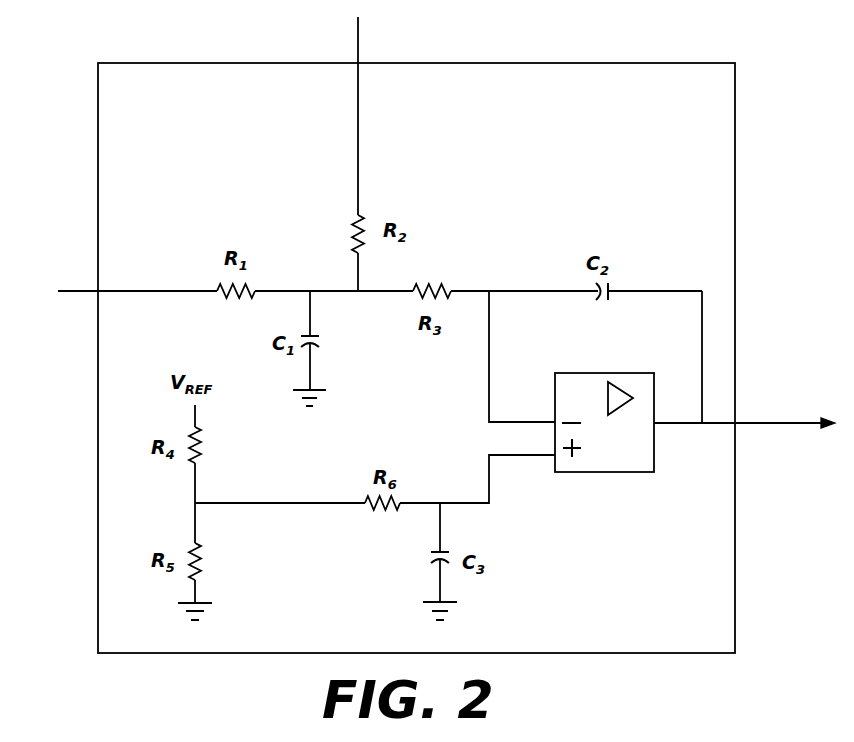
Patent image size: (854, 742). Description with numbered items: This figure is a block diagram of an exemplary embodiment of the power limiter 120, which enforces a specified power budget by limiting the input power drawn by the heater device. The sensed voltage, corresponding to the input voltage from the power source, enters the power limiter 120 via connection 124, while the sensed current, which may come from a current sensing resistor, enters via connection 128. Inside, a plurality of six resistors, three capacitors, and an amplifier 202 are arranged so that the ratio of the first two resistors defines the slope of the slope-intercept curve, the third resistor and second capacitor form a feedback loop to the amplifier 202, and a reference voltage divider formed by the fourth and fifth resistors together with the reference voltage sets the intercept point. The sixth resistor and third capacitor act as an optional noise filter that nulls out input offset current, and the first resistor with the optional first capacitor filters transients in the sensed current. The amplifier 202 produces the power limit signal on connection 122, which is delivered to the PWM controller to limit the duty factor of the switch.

The power limiter 120 is at (712, 637).
The connection 122 is at (797, 427).
The connection 124 is at (358, 43).
The connection 128 is at (78, 292).
The amplifier 202 is at (603, 473).